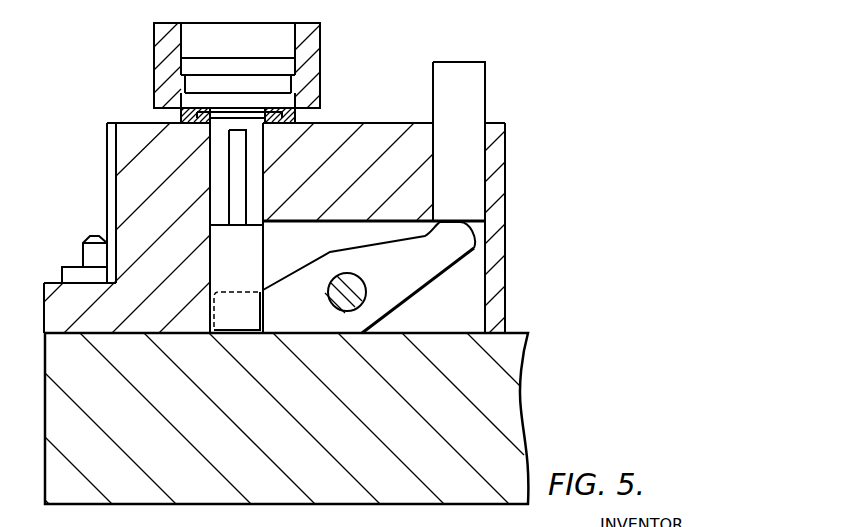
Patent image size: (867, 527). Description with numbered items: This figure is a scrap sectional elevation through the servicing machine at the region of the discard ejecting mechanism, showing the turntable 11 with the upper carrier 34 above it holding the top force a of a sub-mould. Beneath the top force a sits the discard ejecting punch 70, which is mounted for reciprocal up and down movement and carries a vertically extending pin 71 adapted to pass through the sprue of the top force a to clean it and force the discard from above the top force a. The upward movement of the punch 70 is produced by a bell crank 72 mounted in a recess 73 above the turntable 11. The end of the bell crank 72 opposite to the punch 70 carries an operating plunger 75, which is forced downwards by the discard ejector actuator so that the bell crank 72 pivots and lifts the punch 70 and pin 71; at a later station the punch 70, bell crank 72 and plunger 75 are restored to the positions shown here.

The turntable 11 is at (498, 390).
The upper carrier 34 is at (311, 36).
The top force a is at (250, 68).
The discard ejecting punch 70 is at (250, 252).
The pin 71 is at (237, 188).
The bell crank 72 is at (425, 277).
The recess 73 is at (475, 322).
The operating plunger 75 is at (473, 81).